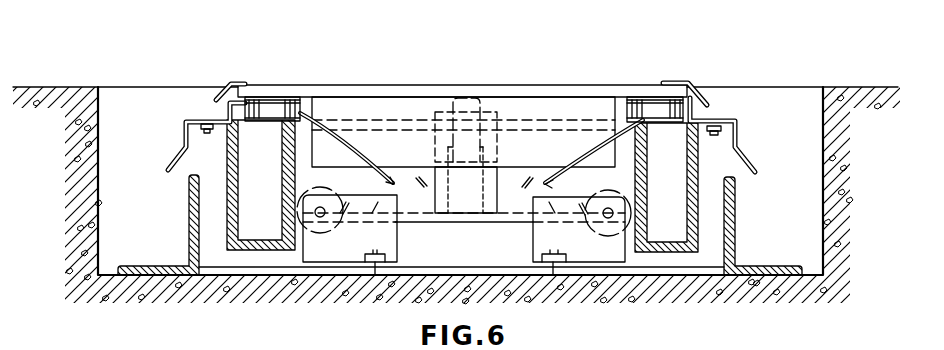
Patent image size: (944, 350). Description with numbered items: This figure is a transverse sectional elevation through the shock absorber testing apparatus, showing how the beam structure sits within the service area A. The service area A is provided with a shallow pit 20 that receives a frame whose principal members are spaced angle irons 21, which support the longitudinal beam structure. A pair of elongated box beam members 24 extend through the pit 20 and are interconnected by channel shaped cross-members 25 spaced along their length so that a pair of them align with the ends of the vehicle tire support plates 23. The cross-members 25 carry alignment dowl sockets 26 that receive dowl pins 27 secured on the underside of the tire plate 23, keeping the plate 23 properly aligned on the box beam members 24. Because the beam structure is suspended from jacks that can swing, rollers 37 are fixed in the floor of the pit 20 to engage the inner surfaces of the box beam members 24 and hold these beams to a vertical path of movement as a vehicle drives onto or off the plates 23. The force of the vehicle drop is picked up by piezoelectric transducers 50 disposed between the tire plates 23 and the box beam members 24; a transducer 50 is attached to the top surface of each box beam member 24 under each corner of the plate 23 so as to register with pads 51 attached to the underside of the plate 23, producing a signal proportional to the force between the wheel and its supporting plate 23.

The service area A is at (42, 87).
The shallow pit 20 is at (100, 110).
The angle irons 21 is at (190, 235).
The vehicle tire support plates 23 is at (378, 85).
The elongated box beam members 24 is at (262, 250).
The channel shaped cross-members 25 is at (426, 204).
The alignment dowl sockets 26 is at (495, 177).
The dowl pins 27 is at (490, 97).
The rollers 37 is at (305, 188).
The piezoelectric transducers 50 is at (258, 105).
The pads 51 is at (287, 100).